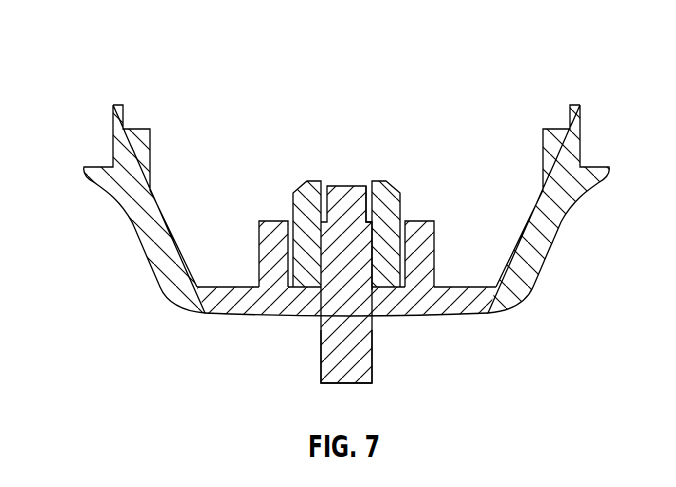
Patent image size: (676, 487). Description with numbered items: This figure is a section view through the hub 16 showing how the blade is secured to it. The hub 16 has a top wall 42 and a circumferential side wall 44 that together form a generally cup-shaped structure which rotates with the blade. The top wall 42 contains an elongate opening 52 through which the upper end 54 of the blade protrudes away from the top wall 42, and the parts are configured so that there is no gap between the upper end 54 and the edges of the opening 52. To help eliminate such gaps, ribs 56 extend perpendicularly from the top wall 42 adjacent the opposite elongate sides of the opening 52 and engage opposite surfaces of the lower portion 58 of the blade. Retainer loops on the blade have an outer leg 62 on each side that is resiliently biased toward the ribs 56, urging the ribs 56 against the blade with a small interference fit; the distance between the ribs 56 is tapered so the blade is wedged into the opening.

The hub 16 is at (324, 204).
The top wall 42 is at (505, 307).
The circumferential side wall 44 is at (552, 215).
The elongate opening 52 is at (327, 350).
The upper end of blade 54 is at (370, 352).
The ribs 56 is at (305, 193).
The lower portion of blade 58 is at (368, 283).
The outer leg 62 is at (267, 232).